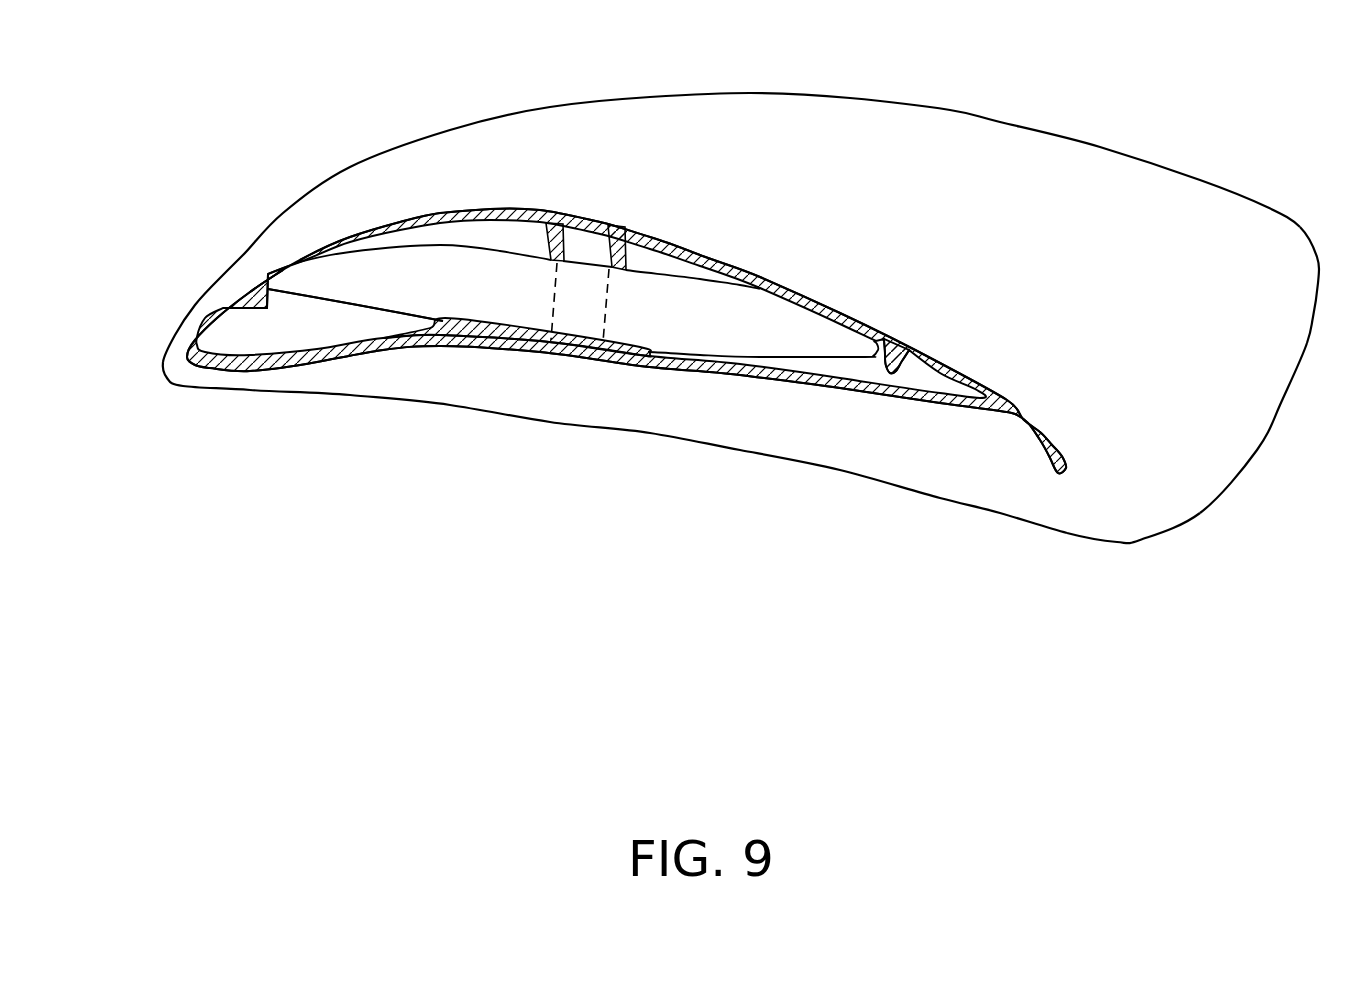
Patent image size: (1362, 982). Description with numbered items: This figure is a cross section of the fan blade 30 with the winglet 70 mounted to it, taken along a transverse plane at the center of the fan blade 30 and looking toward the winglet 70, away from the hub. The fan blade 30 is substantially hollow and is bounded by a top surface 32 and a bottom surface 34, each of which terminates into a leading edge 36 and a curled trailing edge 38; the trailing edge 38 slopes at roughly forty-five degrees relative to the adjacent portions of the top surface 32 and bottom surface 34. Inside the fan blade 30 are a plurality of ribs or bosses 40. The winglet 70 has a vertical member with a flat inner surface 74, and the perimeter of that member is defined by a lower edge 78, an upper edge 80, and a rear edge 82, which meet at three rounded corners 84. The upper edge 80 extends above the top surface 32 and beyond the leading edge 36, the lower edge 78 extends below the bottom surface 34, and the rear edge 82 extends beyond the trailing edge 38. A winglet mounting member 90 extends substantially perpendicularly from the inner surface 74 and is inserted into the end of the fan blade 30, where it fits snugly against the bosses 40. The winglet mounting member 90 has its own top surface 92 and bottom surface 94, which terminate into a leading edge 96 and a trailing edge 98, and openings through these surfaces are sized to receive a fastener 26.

The fastener 26 is at (581, 250).
The fan blade 30 is at (642, 333).
The top surface 32 is at (810, 295).
The bottom surface 34 is at (630, 358).
The leading edge 36 is at (187, 354).
The trailing edge 38 is at (1067, 462).
The ribs or bosses 40 is at (547, 242).
The winglet 70 is at (746, 342).
The inner surface 74 is at (746, 343).
The lower edge 78 is at (592, 428).
The upper edge 80 is at (893, 101).
The rear edge 82 is at (1257, 450).
The corner 84 is at (1316, 258).
The winglet mounting member 90 is at (455, 297).
The top surface 92 is at (657, 274).
The bottom surface 94 is at (364, 311).
The leading edge 96 is at (262, 282).
The trailing edge 98 is at (890, 338).